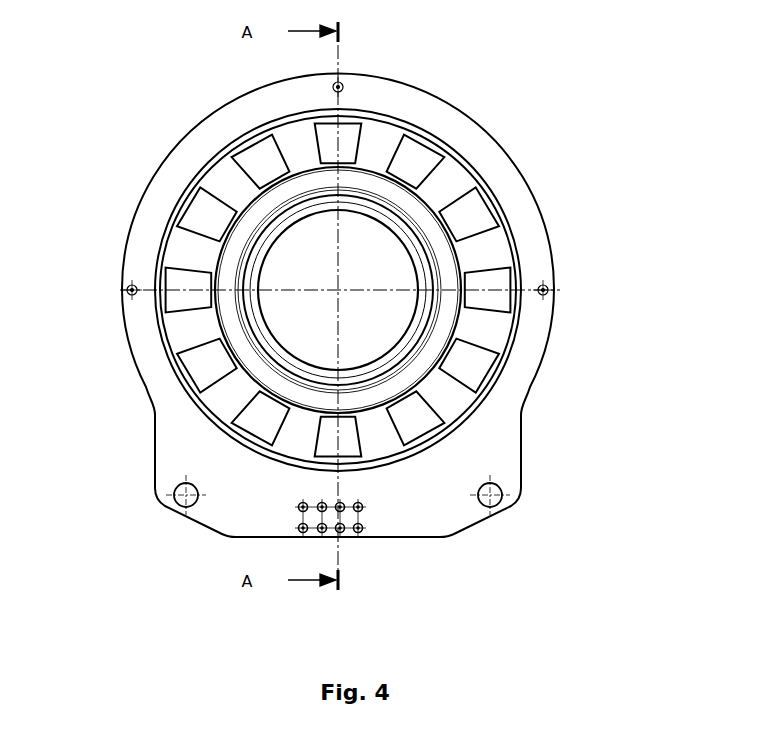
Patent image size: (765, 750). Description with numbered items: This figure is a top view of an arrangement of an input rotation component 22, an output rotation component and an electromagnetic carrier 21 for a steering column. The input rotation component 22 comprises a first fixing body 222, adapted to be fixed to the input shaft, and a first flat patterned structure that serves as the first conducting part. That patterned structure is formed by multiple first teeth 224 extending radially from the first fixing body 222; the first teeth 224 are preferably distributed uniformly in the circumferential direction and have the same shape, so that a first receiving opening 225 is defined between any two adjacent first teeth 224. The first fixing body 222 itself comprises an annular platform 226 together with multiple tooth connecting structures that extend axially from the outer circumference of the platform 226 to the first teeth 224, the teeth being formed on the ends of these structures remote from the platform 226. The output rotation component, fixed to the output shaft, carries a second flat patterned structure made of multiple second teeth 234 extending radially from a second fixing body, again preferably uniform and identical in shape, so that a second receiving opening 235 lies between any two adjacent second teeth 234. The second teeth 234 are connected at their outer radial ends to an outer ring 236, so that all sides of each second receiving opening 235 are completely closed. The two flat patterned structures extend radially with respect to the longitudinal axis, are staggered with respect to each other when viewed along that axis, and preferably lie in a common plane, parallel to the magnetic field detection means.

The electromagnetic carrier 21 is at (545, 330).
The input rotation component 22 is at (460, 205).
The first fixing body 222 is at (237, 233).
The first teeth 224 is at (352, 142).
The first receiving opening 225 is at (243, 188).
The annular platform 226 is at (238, 325).
The second teeth 234 is at (253, 423).
The second receiving opening 235 is at (455, 393).
The outer ring 236 is at (432, 222).